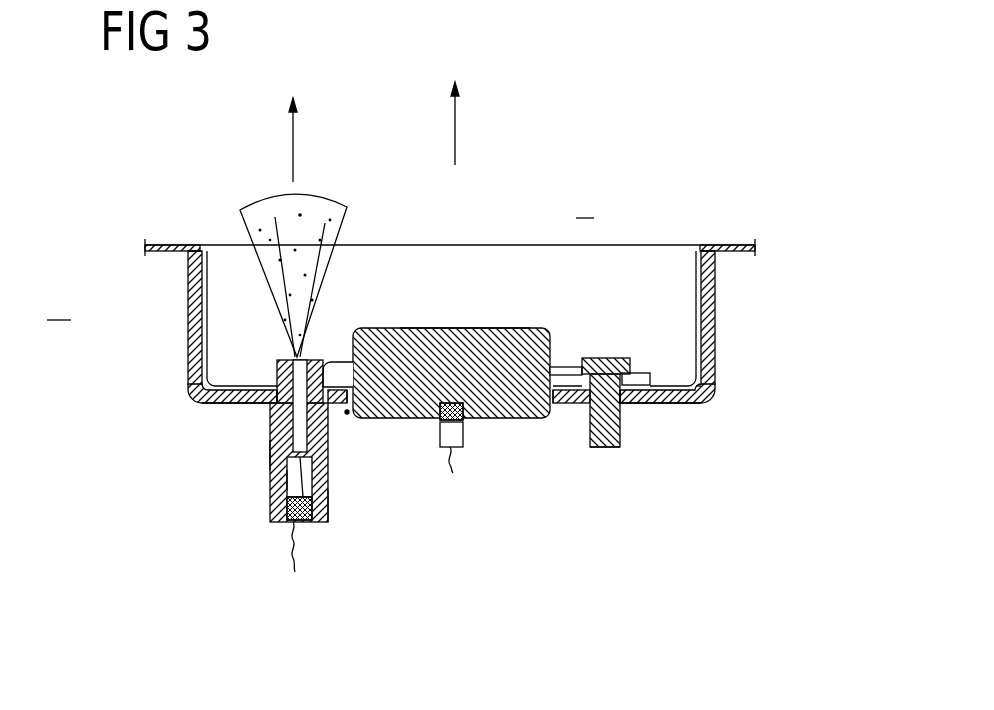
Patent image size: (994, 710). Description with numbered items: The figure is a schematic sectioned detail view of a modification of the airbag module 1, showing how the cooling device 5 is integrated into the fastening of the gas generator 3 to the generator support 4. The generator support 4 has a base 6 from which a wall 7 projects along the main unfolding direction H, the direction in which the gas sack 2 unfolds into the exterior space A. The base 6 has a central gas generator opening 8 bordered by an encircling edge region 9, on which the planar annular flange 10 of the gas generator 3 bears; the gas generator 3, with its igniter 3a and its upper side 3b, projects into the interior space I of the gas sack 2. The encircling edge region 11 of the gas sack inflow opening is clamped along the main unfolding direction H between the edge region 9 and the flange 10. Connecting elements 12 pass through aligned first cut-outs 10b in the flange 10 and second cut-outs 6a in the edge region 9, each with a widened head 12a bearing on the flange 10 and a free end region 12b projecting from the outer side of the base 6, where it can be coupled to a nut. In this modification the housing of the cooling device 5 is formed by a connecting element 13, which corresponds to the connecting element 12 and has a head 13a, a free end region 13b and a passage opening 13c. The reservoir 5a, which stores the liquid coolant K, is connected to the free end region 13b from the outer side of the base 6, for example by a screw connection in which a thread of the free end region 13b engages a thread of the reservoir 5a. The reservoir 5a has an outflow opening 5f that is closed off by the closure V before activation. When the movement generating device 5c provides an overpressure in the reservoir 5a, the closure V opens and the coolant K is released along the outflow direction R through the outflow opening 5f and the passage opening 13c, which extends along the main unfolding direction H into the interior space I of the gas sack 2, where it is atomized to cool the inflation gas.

The airbag module 1 is at (748, 292).
The gas sack 2 is at (735, 244).
The gas generator 3 is at (508, 401).
The igniter 3a is at (463, 448).
The upper side of the gas generator 3b is at (481, 328).
The generator support 4 is at (698, 382).
The cooling device 5 is at (270, 505).
The reservoir 5a is at (273, 480).
The movement generating device 5c is at (287, 511).
The outflow opening 5f is at (310, 524).
The base 6 is at (657, 404).
The second cut-outs 6a is at (267, 408).
The wall 7 is at (187, 312).
The gas generator opening 8 is at (347, 418).
The edge region of the gas generator opening 9 is at (576, 404).
The flange 10 is at (561, 366).
The first cut-outs 10b is at (260, 377).
The edge region of the inflow opening 11 is at (197, 393).
The connecting elements 12 is at (619, 416).
The widened head 12a is at (604, 364).
The screw end 12b is at (597, 448).
The connecting element 13 is at (270, 418).
The sleeve collar 13a is at (321, 353).
The free end region 13b is at (273, 440).
The passage opening 13c is at (327, 496).
The coolant K is at (313, 216).
The outflow direction R is at (278, 140).
The main unfolding direction H is at (469, 123).
The interior space I is at (585, 200).
The exterior space A is at (59, 302).
The closure V is at (270, 462).